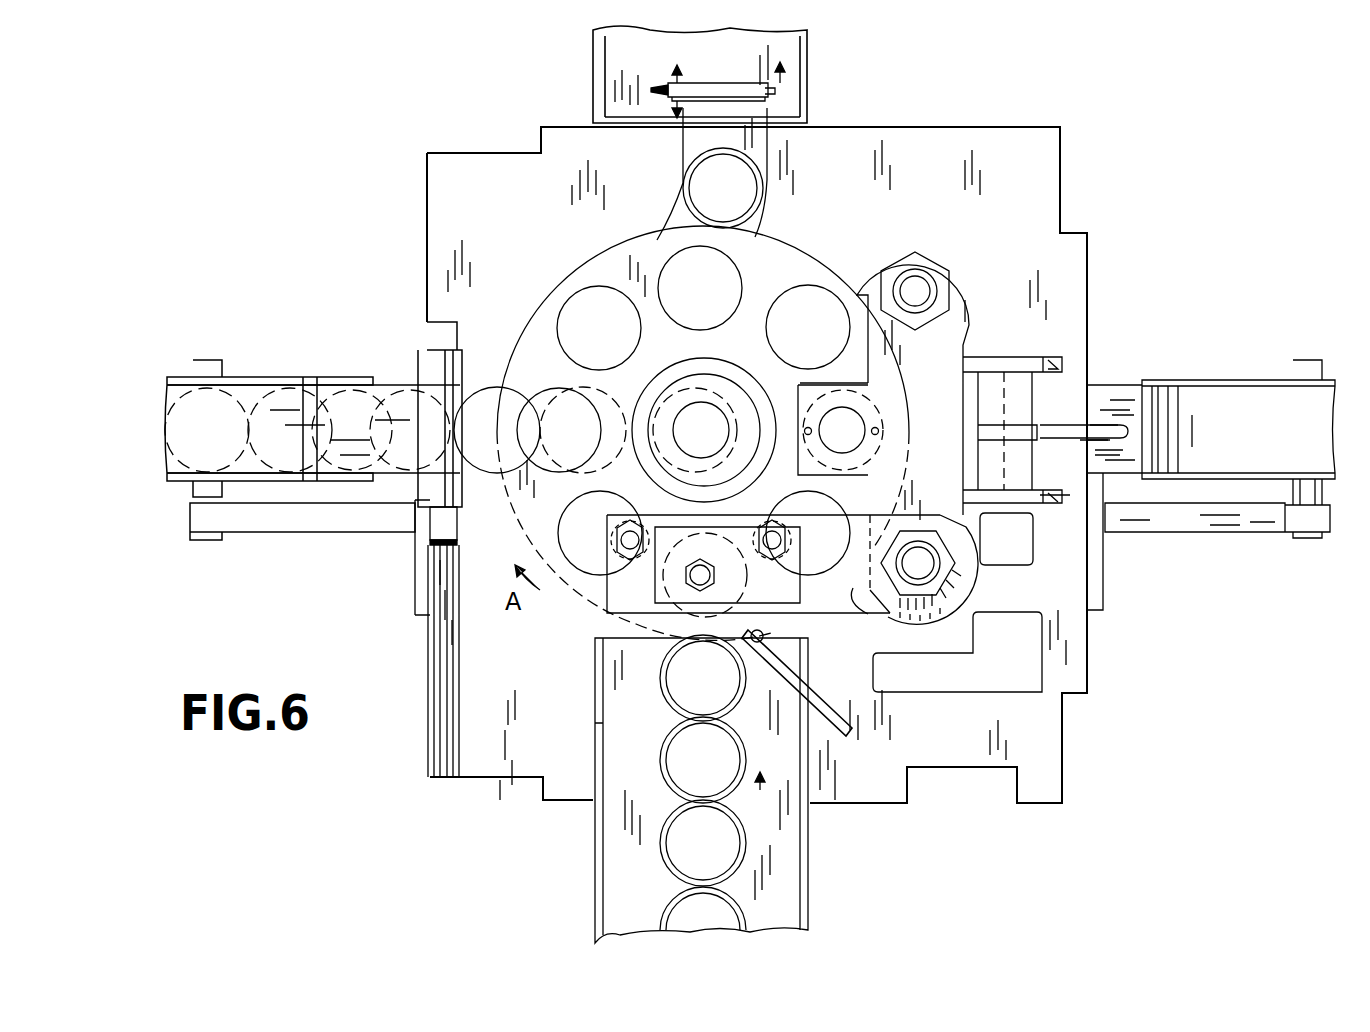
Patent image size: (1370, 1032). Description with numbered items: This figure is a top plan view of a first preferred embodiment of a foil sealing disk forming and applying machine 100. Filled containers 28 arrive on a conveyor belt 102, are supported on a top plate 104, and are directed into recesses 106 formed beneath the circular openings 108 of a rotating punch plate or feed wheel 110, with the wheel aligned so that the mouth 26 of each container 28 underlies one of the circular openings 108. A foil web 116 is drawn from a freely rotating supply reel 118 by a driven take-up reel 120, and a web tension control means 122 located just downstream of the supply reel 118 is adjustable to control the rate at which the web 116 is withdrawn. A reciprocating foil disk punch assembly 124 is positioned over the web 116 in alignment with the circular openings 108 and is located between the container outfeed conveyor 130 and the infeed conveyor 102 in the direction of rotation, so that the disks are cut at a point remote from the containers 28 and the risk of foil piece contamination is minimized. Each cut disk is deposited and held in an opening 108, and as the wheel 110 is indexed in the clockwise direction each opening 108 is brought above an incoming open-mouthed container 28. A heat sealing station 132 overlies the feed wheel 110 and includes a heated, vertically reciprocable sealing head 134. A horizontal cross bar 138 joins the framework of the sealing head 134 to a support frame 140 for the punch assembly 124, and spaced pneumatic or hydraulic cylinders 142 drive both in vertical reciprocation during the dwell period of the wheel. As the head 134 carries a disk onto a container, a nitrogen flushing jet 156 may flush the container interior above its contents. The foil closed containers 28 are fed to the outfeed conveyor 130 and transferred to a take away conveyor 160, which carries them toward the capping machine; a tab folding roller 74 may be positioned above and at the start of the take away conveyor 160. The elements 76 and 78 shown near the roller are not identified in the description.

The mouth 26 is at (703, 782).
The container 28 is at (763, 190).
The tab folding roller 74 is at (697, 82).
The pusher rod 76 is at (770, 93).
The pusher tip 78 is at (655, 88).
The foil sealing disk forming and applying machine 100 is at (1185, 200).
The conveyor belt 102 is at (612, 903).
The top plate 104 is at (470, 718).
The recess 106 is at (545, 328).
The circular opening 108 is at (605, 300).
The rotating punch plate or feed wheel 110 is at (812, 245).
The foil web 116 is at (1112, 385).
The supply reel 118 is at (1222, 380).
The take-up reel 120 is at (262, 380).
The web tension control means 122 is at (1056, 342).
The reciprocating foil disk punch assembly 124 is at (905, 490).
The container outfeed conveyor 130 is at (760, 150).
The heat sealing station 132 is at (730, 512).
The heat sealing head 134 is at (740, 585).
The horizontal cross bar 138 is at (852, 600).
The support frame 140 is at (950, 352).
The pneumatic or hydraulic cylinder 142 is at (968, 258).
The nitrogen flushing jet 156 is at (797, 683).
The take away conveyor 160 is at (790, 46).